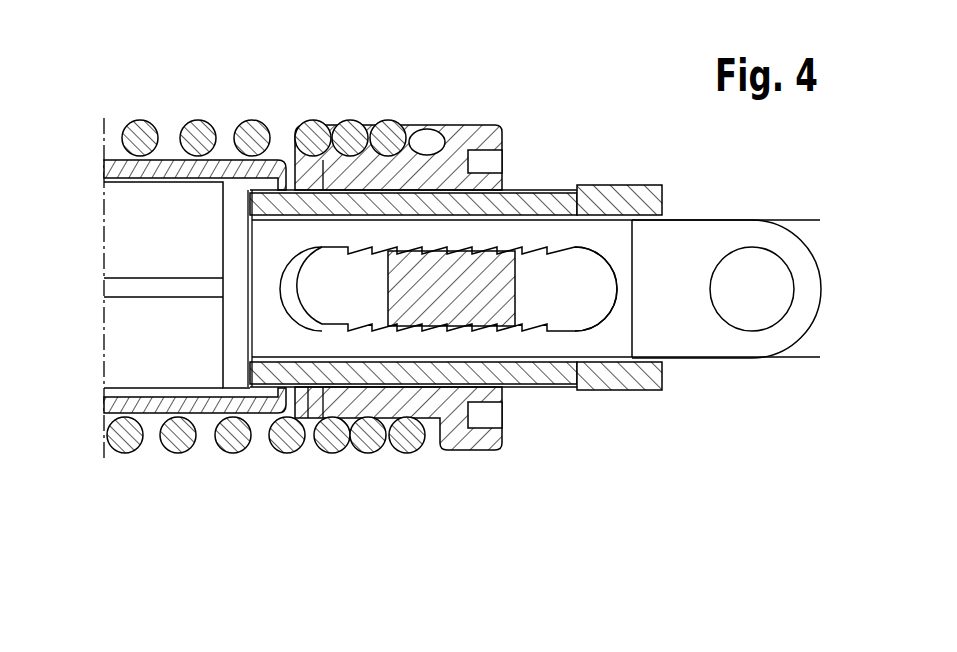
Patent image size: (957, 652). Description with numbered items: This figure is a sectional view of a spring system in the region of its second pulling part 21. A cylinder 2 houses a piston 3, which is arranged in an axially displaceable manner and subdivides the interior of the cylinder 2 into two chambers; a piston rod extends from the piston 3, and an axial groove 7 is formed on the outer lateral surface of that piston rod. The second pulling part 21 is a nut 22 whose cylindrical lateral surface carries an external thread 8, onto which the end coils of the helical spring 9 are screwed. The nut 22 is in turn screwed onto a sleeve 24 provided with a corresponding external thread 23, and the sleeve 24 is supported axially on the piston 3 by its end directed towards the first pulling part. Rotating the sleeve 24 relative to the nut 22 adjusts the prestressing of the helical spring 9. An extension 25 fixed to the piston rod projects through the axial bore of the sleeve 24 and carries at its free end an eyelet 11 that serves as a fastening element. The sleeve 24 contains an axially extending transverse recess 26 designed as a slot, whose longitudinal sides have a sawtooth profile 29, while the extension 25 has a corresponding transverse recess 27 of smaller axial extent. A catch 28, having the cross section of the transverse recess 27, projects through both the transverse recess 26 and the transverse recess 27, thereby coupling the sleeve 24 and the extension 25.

The cylinder 2 is at (114, 165).
The piston 3 is at (165, 210).
The axial groove 7 is at (143, 290).
The external thread 8 is at (350, 143).
The helical spring 9 is at (195, 147).
The eyelet 11 is at (753, 295).
The second pulling part 21 is at (406, 231).
The nut 22 is at (482, 137).
The external thread 23 is at (548, 193).
The sleeve 24 is at (625, 200).
The extension 25 is at (568, 343).
The transverse recess 26 is at (575, 295).
The transverse recess 27 is at (493, 328).
The catch 28 is at (482, 282).
The sawtooth profile 29 is at (427, 322).